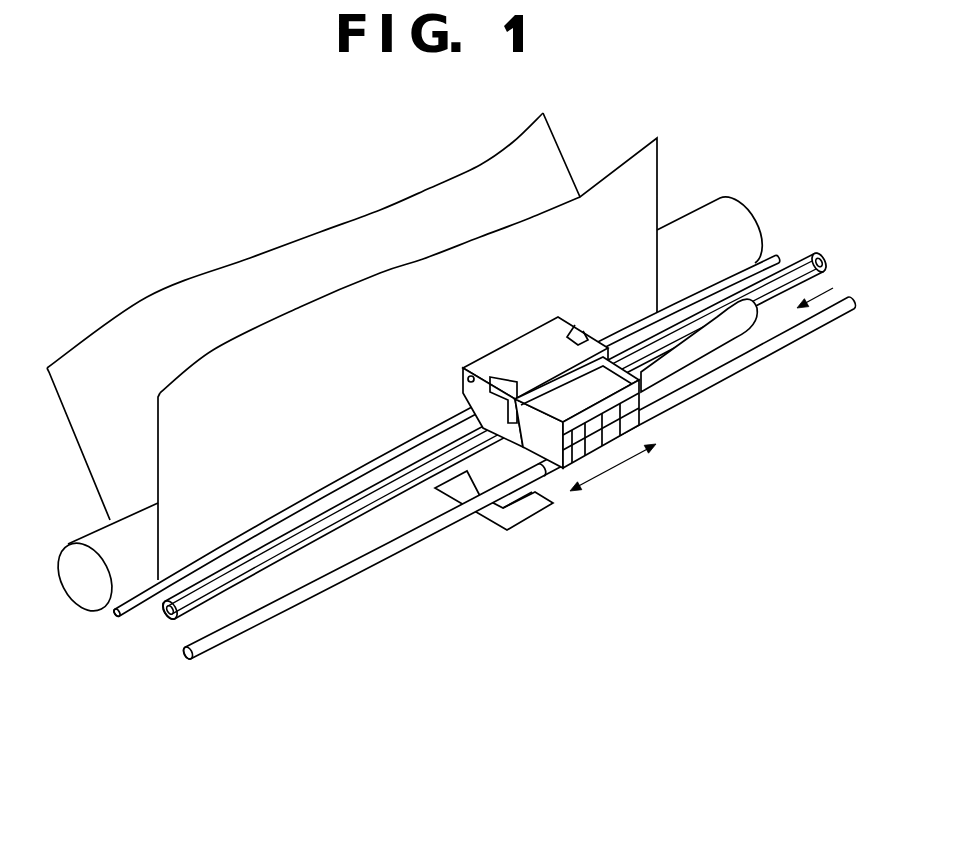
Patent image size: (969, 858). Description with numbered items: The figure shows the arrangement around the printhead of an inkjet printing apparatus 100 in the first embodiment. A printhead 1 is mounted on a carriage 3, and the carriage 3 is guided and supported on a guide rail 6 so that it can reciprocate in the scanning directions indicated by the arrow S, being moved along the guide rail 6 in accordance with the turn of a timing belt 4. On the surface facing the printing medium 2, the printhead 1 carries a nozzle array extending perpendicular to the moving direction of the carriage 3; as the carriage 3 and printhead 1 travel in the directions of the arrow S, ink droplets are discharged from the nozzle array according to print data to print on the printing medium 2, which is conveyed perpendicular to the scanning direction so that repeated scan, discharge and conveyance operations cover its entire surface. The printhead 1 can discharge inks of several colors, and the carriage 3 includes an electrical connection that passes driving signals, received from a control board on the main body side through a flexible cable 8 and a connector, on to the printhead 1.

The printhead 1 is at (505, 328).
The printing medium 2 is at (157, 320).
The carriage 3 is at (552, 463).
The timing belt 4 is at (797, 260).
The guide rail 6 is at (820, 320).
The flexible cable 8 is at (680, 372).
The inkjet printing apparatus 100 is at (428, 737).